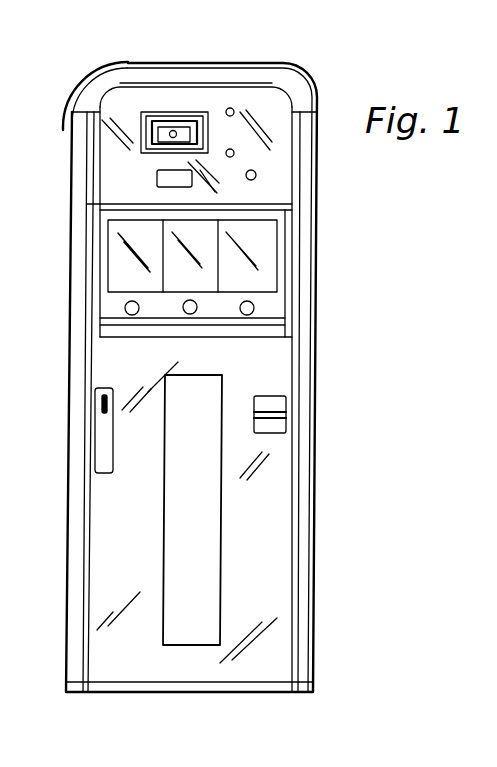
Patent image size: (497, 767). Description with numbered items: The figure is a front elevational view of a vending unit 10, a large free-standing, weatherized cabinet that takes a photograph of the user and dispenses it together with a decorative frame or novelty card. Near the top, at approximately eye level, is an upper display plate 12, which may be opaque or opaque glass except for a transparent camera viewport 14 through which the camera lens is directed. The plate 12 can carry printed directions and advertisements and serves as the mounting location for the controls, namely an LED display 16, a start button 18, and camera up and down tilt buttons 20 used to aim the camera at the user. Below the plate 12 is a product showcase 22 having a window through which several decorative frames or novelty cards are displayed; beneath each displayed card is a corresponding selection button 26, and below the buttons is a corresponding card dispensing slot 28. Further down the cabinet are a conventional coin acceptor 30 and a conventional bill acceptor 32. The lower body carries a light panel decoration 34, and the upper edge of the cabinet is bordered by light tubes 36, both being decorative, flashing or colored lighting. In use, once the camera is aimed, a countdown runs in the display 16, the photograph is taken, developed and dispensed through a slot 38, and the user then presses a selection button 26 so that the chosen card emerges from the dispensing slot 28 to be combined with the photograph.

The vending unit 10 is at (96, 715).
The upper display plate 12 is at (280, 143).
The camera viewport 14 is at (188, 112).
The LED display 16 is at (157, 178).
The start button 18 is at (257, 175).
The camera up and down tilt buttons 20 is at (234, 150).
The product showcase 22 is at (275, 303).
The selection button 26 is at (183, 309).
The card dispensing slot 28 is at (260, 333).
The coin acceptor 30 is at (100, 452).
The bill acceptor 32 is at (280, 426).
The light panel decoration 34 is at (210, 522).
The upper bordering light tubes 36 is at (97, 70).
The slot 38 is at (170, 162).